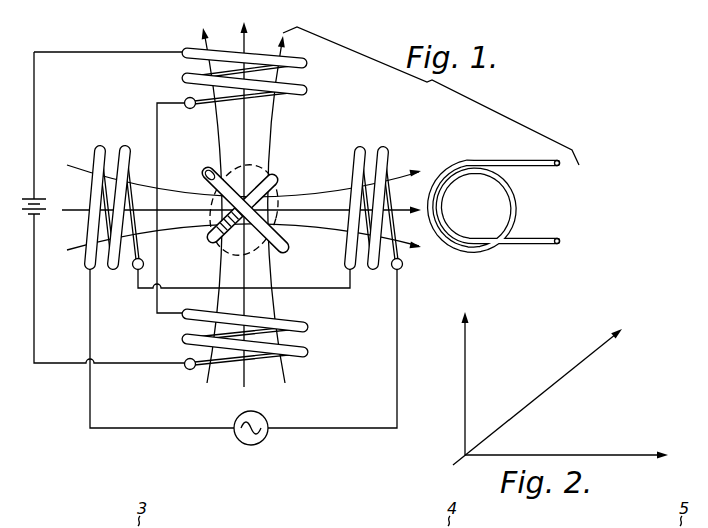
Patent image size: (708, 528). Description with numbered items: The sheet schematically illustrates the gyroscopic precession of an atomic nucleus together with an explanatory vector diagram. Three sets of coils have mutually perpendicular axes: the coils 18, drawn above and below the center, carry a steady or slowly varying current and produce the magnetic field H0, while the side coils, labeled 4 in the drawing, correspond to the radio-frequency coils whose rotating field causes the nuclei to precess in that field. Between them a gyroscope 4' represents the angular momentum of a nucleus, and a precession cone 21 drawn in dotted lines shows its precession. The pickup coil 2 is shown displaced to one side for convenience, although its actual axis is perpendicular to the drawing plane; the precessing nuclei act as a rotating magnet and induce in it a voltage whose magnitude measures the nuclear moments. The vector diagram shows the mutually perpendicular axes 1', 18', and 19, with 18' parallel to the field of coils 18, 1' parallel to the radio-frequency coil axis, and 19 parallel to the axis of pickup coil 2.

In FIG. 1, the coils 18 is at (269, 211).
In FIG. 1, the horizontal field coil 4 is at (246, 227).
In FIG. 1, the precession cone 21 is at (270, 166).
In FIG. 1, the gyroscope 4' is at (265, 205).
In FIG. 1, the coil 2 is at (436, 176).
In FIG. 2, the axis 18' is at (488, 383).
In FIG. 2, the axis 1' is at (566, 438).
In FIG. 2, the axis 19 is at (568, 370).